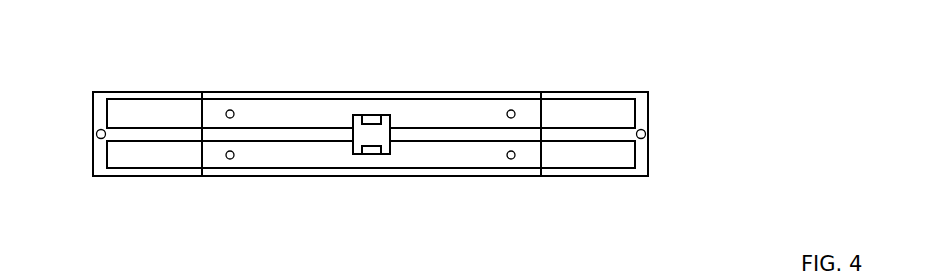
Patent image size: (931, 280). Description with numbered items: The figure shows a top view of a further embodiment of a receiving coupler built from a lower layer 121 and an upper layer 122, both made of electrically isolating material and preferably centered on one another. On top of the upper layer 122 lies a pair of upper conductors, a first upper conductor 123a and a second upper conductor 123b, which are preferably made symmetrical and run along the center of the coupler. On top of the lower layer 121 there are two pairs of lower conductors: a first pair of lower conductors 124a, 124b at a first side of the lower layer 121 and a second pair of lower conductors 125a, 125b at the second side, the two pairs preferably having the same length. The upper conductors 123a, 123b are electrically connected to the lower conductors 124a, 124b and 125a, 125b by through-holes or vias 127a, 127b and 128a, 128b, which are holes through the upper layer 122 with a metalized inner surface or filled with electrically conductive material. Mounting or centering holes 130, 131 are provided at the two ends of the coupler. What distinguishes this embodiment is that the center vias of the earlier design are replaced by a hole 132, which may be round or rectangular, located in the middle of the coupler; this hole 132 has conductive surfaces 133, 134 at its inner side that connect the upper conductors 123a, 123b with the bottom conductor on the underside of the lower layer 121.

The lower layer 121 is at (637, 177).
The upper layer 122 is at (105, 177).
The first upper conductor 123a is at (440, 114).
The second upper conductor 123b is at (440, 155).
The first conductor of first pair of lower conductors 124a is at (153, 114).
The second conductor of first pair of lower conductors 124b is at (163, 155).
The first conductor of second pair of lower conductors 125a is at (592, 113).
The second conductor of second pair of lower conductors 125b is at (578, 155).
The via 127a is at (230, 110).
The via 127b is at (230, 159).
The via 128a is at (511, 110).
The via 128b is at (511, 159).
The mounting or centering hole 130 is at (96, 134).
The mounting or centering hole 131 is at (646, 134).
The hole 132 is at (347, 150).
The conductive surface 133 is at (369, 116).
The conductive surface 134 is at (370, 154).